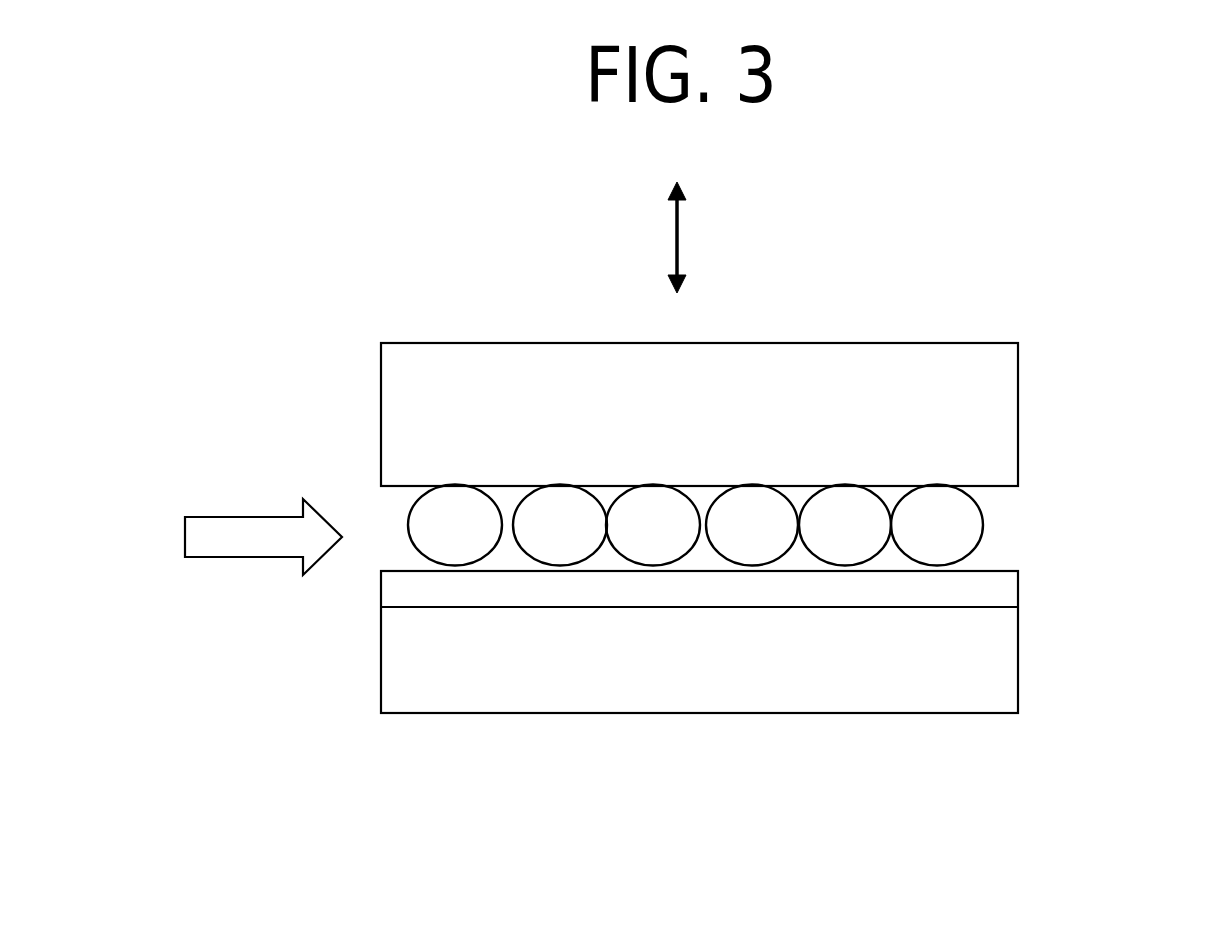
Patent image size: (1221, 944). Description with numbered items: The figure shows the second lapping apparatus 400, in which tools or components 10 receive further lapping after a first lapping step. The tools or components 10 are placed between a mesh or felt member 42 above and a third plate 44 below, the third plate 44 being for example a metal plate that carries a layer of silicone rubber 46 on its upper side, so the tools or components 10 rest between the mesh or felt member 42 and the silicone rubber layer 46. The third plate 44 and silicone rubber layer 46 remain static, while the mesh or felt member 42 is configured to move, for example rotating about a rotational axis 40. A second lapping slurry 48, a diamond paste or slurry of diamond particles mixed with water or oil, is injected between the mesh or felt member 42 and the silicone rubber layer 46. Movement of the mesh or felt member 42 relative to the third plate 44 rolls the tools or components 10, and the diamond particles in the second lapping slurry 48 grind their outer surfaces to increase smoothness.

The second lapping apparatus 400 is at (266, 358).
The rotational axis 40 is at (683, 232).
The mesh or felt member 42 is at (983, 343).
The tools or components 10 is at (980, 530).
The third plate 44 is at (421, 718).
The silicone rubber layer 46 is at (379, 590).
The second lapping slurry 48 is at (227, 563).